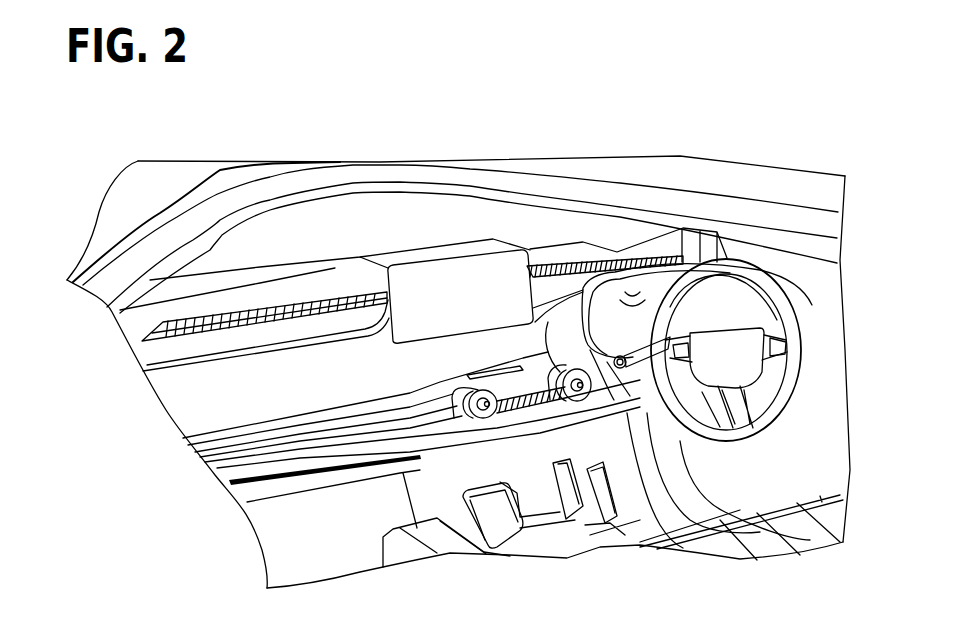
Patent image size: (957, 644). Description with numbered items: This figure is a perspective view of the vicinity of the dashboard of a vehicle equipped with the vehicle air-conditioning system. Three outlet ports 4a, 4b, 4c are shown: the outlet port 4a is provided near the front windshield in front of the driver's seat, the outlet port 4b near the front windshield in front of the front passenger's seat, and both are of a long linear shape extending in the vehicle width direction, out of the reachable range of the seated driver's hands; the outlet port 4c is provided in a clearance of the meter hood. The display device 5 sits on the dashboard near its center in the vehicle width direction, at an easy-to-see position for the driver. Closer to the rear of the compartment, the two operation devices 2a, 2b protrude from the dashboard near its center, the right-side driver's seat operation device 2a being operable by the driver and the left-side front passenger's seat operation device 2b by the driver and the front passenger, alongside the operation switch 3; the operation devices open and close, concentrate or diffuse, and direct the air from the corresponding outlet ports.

The driver's seat operation device 2a is at (577, 403).
The front passenger's seat operation device 2b is at (483, 420).
The operation switch 3 is at (527, 372).
The outlet port 4a is at (614, 255).
The outlet port 4b is at (233, 310).
The outlet port 4c is at (630, 290).
The display device 5 is at (428, 280).